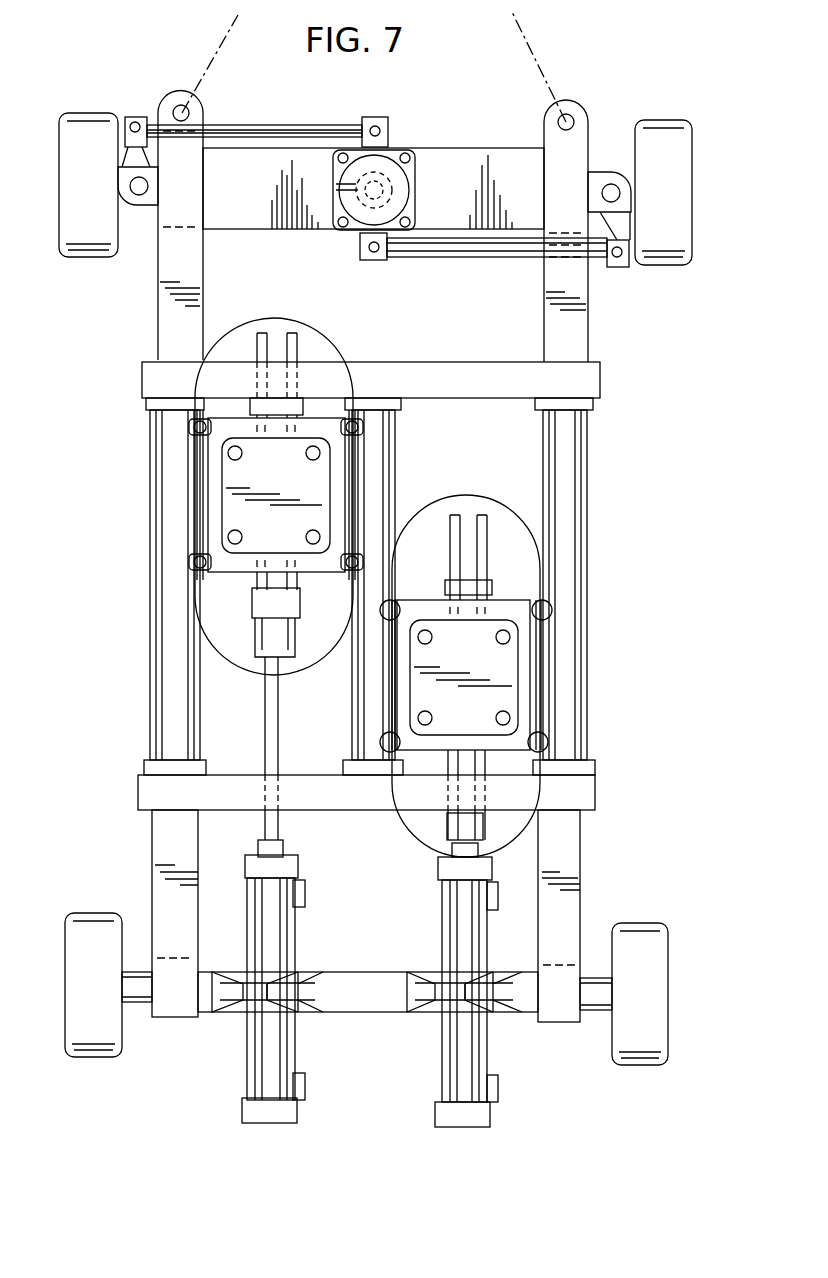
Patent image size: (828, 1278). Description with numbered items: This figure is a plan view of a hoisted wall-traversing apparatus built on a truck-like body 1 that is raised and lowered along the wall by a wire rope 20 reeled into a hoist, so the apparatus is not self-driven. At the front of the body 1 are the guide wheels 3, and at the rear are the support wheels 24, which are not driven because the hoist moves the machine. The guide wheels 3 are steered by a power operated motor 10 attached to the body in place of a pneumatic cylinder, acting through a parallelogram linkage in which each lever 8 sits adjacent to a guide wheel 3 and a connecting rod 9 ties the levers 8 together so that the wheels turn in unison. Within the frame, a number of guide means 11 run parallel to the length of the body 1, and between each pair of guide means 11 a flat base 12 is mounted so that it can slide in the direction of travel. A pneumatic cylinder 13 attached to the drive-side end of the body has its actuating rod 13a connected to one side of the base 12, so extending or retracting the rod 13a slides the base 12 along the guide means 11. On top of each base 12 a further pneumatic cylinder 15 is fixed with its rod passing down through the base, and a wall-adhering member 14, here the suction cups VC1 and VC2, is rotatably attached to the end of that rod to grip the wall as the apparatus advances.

The truck-like body 1 is at (155, 332).
The guide wheels 3 is at (88, 250).
The lever 8 is at (133, 140).
The connecting rod 9 is at (310, 128).
The power operated motor 10 is at (390, 168).
The guide means 11 is at (162, 567).
The flat base 12 is at (213, 510).
The pneumatic cylinder 13 is at (283, 932).
The actuating rod 13a is at (268, 715).
The wall-adhering member 14 is at (333, 339).
The pneumatic cylinder 15 is at (247, 542).
The wire rope 20 is at (232, 42).
The support wheels 24 is at (97, 920).